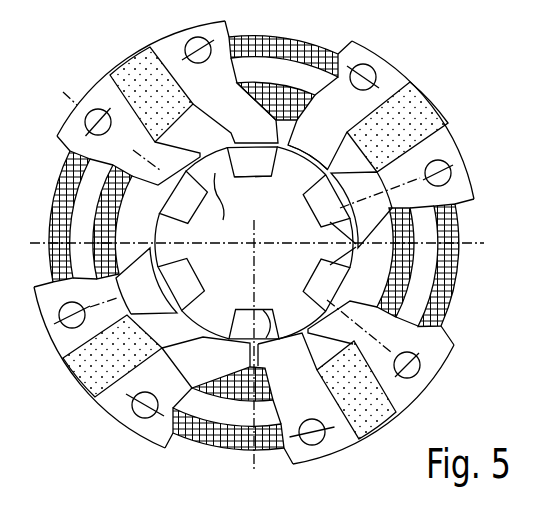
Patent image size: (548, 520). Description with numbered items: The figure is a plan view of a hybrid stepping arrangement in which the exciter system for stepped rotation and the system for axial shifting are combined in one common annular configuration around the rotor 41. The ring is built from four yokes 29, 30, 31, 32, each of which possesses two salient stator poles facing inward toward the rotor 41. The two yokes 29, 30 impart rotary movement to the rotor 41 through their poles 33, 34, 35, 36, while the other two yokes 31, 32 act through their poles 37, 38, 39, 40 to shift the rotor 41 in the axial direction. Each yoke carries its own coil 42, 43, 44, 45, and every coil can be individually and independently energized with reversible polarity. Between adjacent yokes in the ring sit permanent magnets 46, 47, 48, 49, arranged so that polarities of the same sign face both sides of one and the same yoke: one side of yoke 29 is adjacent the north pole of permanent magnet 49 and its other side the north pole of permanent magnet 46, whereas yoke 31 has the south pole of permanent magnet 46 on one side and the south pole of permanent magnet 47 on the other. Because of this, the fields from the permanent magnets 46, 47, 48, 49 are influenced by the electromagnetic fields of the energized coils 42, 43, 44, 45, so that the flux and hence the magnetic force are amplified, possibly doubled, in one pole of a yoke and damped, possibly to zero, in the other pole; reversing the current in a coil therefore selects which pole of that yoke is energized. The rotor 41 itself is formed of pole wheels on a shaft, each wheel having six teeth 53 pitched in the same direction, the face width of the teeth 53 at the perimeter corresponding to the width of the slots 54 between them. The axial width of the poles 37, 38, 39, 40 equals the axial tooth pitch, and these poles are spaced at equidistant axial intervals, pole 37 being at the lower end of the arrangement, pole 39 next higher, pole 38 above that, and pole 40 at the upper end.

The yoke 29 is at (215, 36).
The yoke 30 is at (312, 456).
The yoke 31 is at (437, 138).
The yoke 32 is at (70, 342).
The salient stator pole 33 is at (250, 142).
The salient stator pole 34 is at (278, 158).
The salient stator pole 35 is at (220, 328).
The salient stator pole 36 is at (264, 312).
The salient stator pole 37 is at (350, 198).
The salient stator pole 38 is at (353, 283).
The salient stator pole 39 is at (188, 287).
The salient stator pole 40 is at (160, 192).
The rotor 41 is at (297, 240).
The coil 42 is at (300, 37).
The coil 43 is at (220, 448).
The coil 44 is at (448, 262).
The coil 45 is at (60, 189).
The permanent magnet 46 is at (413, 118).
The permanent magnet 47 is at (380, 410).
The permanent magnet 48 is at (97, 378).
The permanent magnet 49 is at (130, 73).
The teeth 53 is at (232, 207).
The slots 54 is at (265, 177).